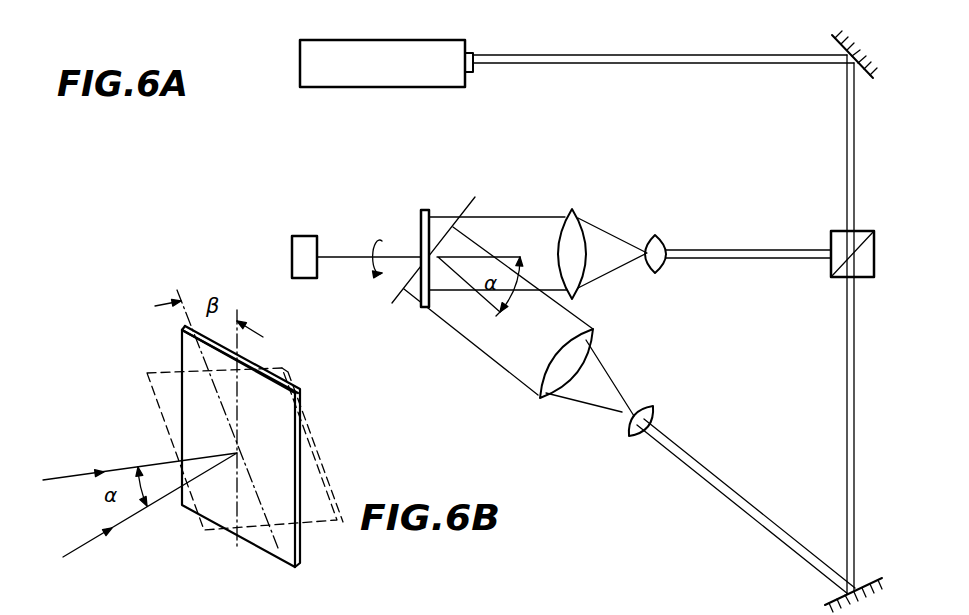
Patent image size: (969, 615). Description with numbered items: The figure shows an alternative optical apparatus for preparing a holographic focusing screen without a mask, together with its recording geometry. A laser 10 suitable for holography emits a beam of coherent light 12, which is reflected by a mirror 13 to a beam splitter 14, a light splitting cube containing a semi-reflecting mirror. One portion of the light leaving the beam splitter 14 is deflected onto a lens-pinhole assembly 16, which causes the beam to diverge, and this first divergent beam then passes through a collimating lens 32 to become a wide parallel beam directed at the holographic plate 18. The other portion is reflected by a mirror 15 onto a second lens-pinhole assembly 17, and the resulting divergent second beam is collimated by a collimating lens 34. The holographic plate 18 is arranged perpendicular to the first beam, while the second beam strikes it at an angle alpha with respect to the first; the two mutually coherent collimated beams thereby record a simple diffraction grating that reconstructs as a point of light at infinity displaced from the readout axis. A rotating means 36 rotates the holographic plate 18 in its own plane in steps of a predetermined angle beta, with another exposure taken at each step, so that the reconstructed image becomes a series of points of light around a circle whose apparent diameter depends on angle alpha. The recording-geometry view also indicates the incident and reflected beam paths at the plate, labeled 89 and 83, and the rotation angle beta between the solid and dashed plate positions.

In FIG. 6A, the laser 10 is at (441, 40).
In FIG. 6A, the beam of coherent light 12 is at (697, 54).
In FIG. 6A, the mirror 13 is at (831, 42).
In FIG. 6A, the beam splitter 14 is at (862, 268).
In FIG. 6A, the mirror 15 is at (870, 578).
In FIG. 6A, the lens-pinhole assembly 16 is at (662, 240).
In FIG. 6A, the second lens-pinhole assembly 17 is at (652, 412).
In FIG. 6A, the holographic plate 18 is at (425, 210).
In FIG. 6B, the holographic plate 18 is at (278, 436).
In FIG. 6A, the collimating lens 32 is at (574, 214).
In FIG. 6A, the collimating lens 34 is at (543, 388).
In FIG. 6A, the rotating means 36 is at (302, 243).
In FIG. 6B, the reflected beam 83 is at (235, 614).
In FIG. 6B, the incident beam 89 is at (106, 614).